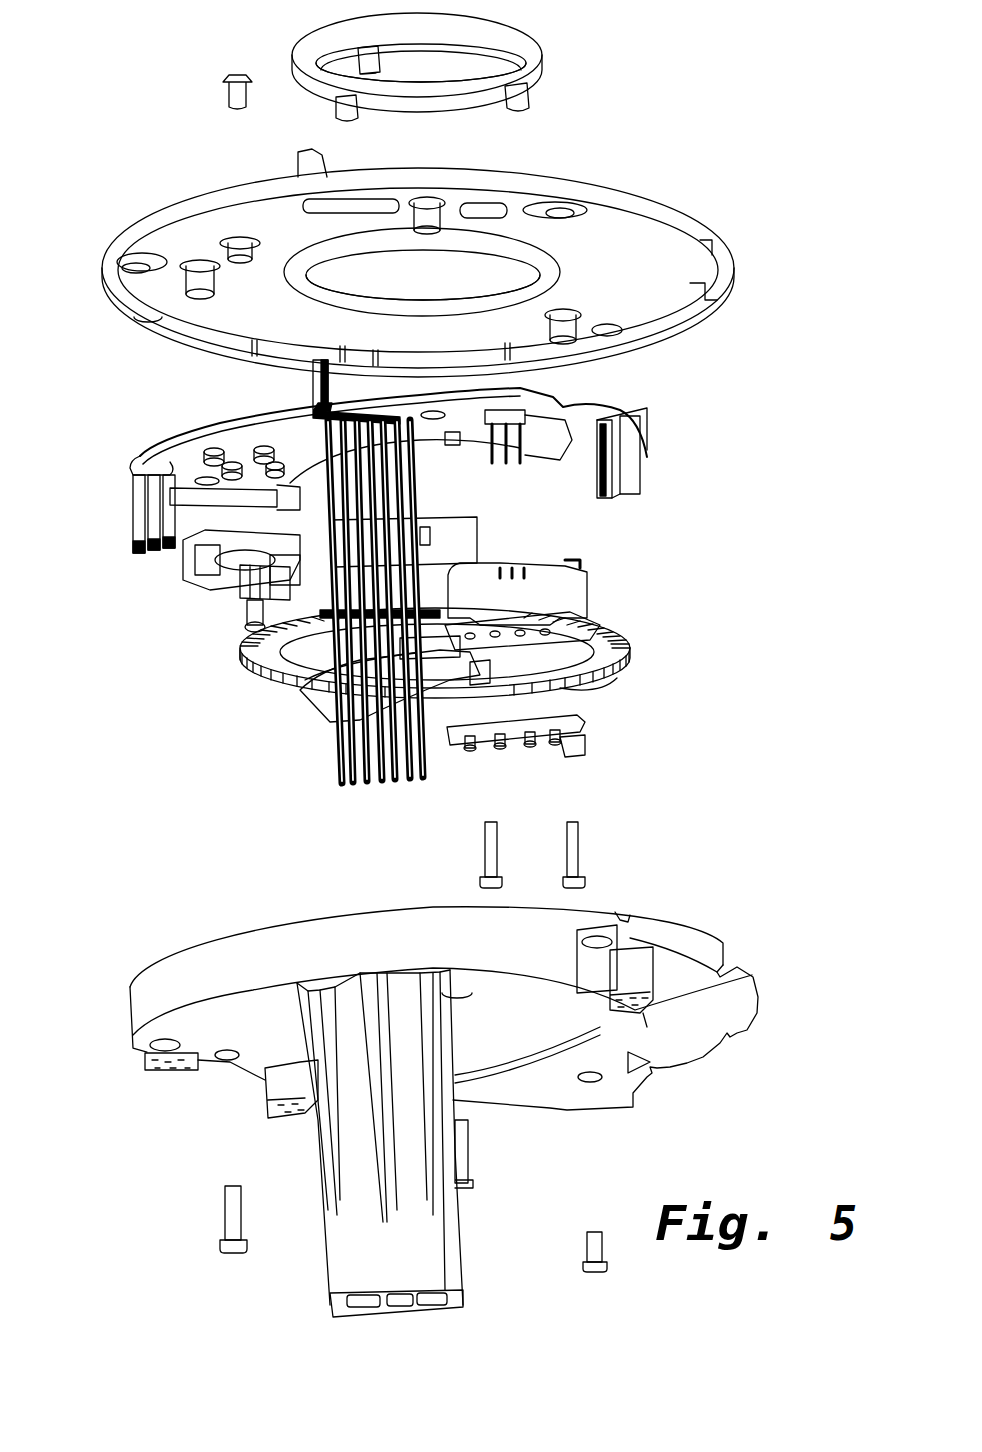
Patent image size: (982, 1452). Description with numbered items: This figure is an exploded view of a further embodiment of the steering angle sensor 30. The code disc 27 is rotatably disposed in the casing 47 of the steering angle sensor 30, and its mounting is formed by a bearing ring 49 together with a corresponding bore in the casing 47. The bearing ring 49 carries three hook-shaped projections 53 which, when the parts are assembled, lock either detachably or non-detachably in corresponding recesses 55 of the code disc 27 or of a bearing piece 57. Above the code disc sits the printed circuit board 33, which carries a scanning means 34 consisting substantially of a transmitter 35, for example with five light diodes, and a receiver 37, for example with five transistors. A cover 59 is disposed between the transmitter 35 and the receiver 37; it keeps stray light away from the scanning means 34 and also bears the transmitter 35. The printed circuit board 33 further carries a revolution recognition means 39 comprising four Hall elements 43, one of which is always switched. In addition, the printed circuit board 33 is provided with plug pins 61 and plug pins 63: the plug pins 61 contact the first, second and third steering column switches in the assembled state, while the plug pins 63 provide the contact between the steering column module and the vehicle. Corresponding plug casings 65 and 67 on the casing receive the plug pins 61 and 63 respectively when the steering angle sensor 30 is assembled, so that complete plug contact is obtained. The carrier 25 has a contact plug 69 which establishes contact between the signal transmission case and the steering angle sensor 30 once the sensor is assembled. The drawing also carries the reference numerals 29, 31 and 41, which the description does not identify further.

The carrier 25 is at (665, 265).
The code disc 27 is at (637, 672).
The toothed ring 29 is at (620, 647).
The steering angle sensor 30 is at (745, 565).
The bracket 31 is at (617, 678).
The printed circuit board 33 is at (235, 425).
The scanning means 34 is at (600, 630).
The transmitter 35 is at (505, 470).
The receiver 37 is at (505, 748).
The revolution recognition means 39 is at (150, 573).
The actuator 41 is at (210, 567).
The Hall elements 43 is at (283, 460).
The casing 47 is at (235, 950).
The bearing ring 49 is at (530, 54).
The hook-shaped projections 53 is at (512, 104).
The recesses 55 is at (420, 733).
The bearing piece 57 is at (535, 698).
The cover 59 is at (527, 593).
The plug pins 61 is at (137, 528).
The plug pins 63 is at (375, 797).
The plug casing 65 is at (752, 975).
The plug casing 67 is at (422, 1247).
The contact plug 69 is at (308, 152).